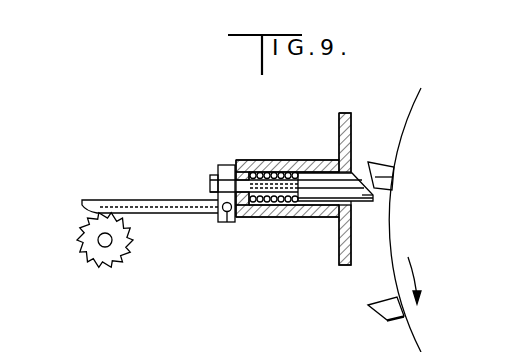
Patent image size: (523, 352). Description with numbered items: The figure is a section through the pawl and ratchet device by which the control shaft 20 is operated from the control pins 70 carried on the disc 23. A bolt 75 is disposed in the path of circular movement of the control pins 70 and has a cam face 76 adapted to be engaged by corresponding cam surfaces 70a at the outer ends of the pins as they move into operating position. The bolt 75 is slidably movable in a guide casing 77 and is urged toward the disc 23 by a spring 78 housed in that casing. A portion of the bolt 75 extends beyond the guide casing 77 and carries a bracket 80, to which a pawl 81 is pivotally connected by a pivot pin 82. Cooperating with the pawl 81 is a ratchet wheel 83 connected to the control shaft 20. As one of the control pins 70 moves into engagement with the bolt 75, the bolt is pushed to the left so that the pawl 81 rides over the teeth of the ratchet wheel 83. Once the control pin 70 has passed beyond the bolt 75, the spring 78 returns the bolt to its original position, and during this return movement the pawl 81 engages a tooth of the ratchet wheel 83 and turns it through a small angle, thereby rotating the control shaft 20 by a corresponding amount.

The control shaft 20 is at (97, 240).
The disc 23 is at (416, 102).
The control pin 70 is at (379, 167).
The cam surface 70a is at (395, 178).
The bolt 75 is at (323, 182).
The cam face 76 is at (375, 198).
The guide casing 77 is at (258, 160).
The spring 78 is at (268, 203).
The bracket 80 is at (220, 172).
The pawl 81 is at (102, 185).
The pivot pin 82 is at (227, 212).
The ratchet wheel 83 is at (105, 262).